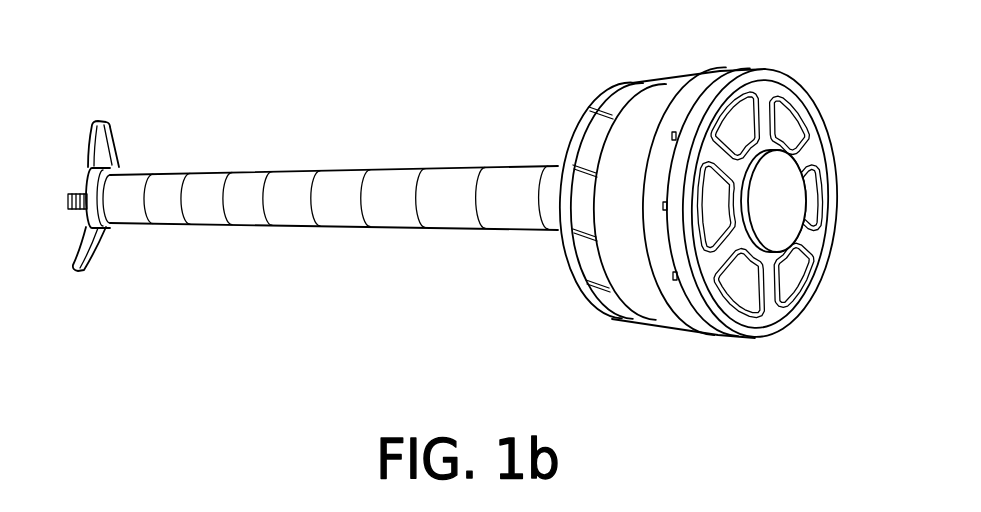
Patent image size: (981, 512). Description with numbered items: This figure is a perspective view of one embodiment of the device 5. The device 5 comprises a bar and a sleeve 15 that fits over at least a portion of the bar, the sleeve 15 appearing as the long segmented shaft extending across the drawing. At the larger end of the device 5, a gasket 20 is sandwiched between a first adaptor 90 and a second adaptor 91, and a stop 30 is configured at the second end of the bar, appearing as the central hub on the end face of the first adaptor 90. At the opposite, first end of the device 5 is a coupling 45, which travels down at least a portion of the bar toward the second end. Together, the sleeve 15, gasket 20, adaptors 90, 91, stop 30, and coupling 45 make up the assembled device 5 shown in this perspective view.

The device 5 is at (846, 58).
The sleeve 15 is at (332, 200).
The gasket 20 is at (658, 100).
The stop 30 is at (790, 202).
The coupling 45 is at (101, 147).
The first adaptor 90 is at (768, 303).
The second adaptor 91 is at (596, 102).